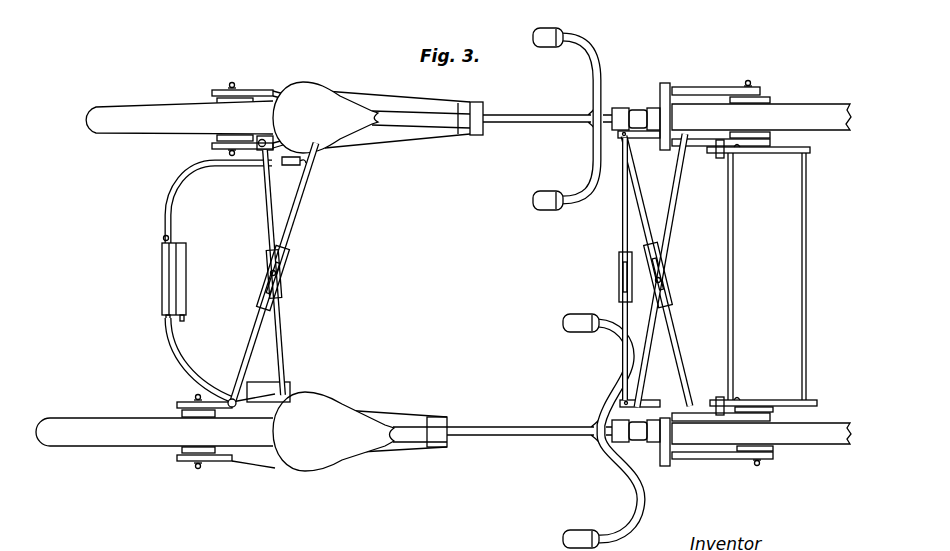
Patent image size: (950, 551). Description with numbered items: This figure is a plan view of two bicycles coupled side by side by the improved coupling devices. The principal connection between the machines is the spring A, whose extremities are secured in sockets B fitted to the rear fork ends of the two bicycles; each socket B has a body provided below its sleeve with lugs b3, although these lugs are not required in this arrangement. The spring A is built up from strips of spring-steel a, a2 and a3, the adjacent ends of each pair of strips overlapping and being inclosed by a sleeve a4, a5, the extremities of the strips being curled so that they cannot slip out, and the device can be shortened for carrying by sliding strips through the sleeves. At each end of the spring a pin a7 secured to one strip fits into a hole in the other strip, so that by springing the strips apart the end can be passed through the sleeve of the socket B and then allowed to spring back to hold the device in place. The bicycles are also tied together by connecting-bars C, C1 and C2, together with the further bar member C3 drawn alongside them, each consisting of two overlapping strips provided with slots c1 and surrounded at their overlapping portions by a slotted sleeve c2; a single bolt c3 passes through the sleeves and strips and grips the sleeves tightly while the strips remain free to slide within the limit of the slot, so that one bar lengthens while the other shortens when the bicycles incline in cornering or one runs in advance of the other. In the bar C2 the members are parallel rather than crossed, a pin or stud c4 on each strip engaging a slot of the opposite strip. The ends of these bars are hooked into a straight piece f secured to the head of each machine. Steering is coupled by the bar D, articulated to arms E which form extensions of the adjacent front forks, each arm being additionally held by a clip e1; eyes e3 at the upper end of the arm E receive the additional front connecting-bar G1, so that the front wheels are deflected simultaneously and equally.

The spring-steel strip a is at (182, 190).
The spring-steel strip a2 is at (191, 196).
The spring-steel strip a3 is at (188, 339).
The sleeve a4 is at (162, 314).
The sleeve a5 is at (186, 315).
The pin a7 is at (288, 167).
The spring A is at (186, 271).
The socket B is at (257, 160).
The connecting-bar C is at (298, 202).
The connecting-bar C1 is at (683, 340).
The connecting-bar C2 is at (288, 262).
The pin C3 is at (271, 273).
The slot c1 is at (671, 213).
The slotted sleeve c2 is at (620, 230).
The bolt c3 is at (663, 283).
The pin or stud c4 is at (665, 258).
The lug b3 is at (647, 110).
The straight piece f is at (655, 138).
The arm E is at (782, 152).
The clip e1 is at (719, 157).
The eye e3 is at (737, 150).
The bar D is at (806, 208).
The connecting-bar G1 is at (735, 282).